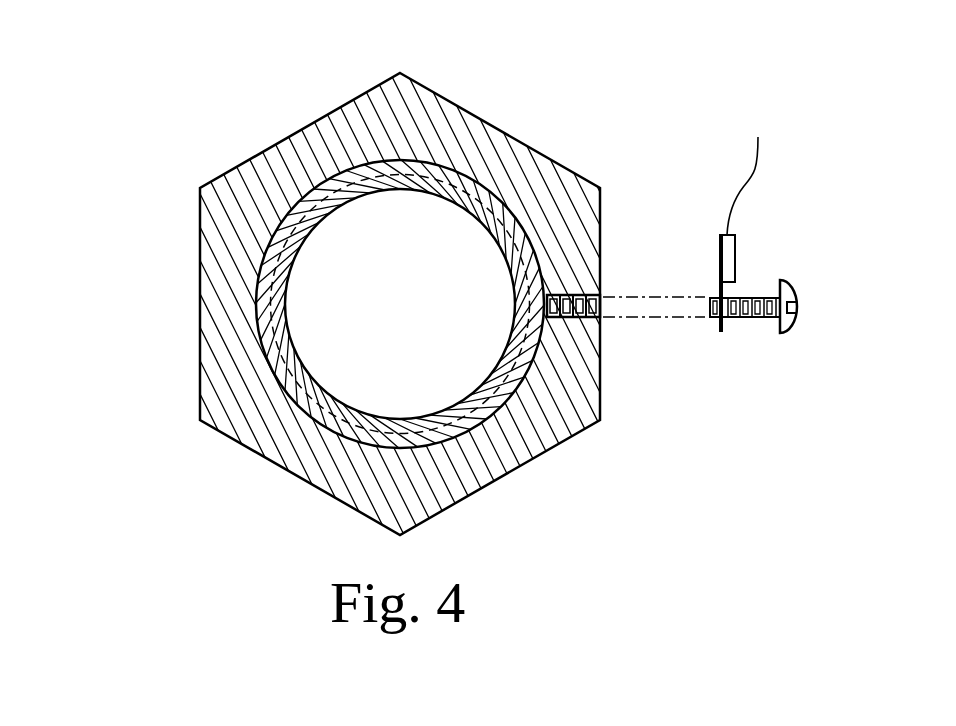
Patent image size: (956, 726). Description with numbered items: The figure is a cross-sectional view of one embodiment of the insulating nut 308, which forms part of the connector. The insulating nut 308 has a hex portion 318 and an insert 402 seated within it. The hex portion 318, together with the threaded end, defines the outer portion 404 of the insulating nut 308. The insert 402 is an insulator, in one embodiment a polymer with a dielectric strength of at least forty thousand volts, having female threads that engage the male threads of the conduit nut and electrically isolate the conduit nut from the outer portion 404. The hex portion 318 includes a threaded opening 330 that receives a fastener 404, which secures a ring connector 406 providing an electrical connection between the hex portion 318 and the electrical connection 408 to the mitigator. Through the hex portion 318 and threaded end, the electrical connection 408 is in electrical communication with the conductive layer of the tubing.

The insulating nut 308 is at (658, 97).
The hex portion 318 is at (200, 228).
The threaded opening 330 is at (603, 297).
The insert 402 is at (362, 413).
The fastener 404 is at (250, 160).
The ring connector 406 is at (735, 262).
The electrical connection 408 is at (758, 168).